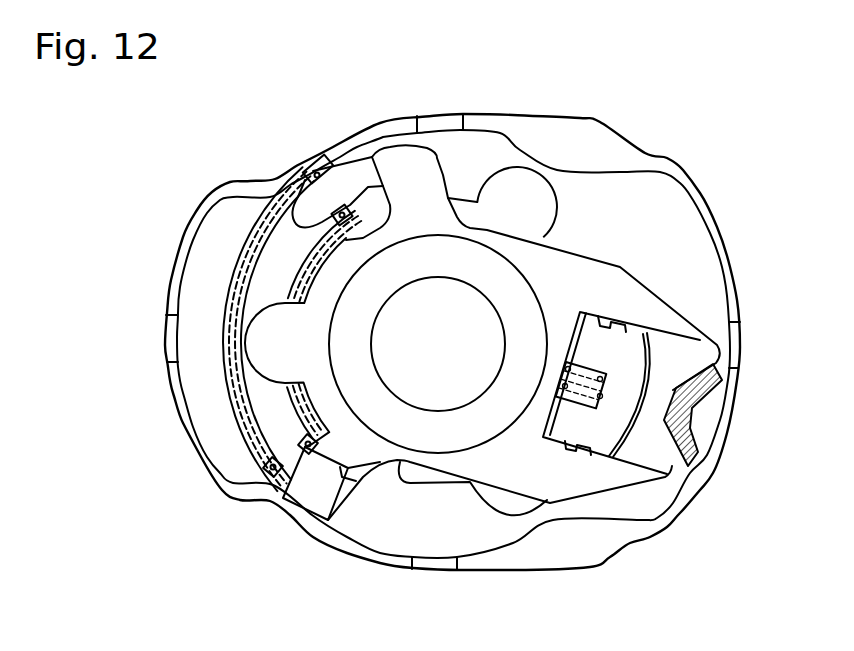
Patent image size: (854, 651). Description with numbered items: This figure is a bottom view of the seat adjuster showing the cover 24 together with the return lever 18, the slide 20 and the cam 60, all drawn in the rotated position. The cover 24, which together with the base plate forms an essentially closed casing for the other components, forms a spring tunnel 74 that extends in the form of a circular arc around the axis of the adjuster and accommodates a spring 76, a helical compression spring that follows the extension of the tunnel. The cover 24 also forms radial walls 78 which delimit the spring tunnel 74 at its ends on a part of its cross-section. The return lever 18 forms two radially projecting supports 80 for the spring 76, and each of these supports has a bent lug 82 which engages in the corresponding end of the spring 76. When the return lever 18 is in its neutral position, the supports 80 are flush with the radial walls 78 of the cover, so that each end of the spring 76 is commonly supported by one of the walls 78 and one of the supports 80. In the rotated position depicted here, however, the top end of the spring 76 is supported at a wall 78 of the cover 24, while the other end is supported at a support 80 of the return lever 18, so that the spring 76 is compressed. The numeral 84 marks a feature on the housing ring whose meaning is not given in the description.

The return lever 18 is at (602, 262).
The slide 20 is at (670, 463).
The cover 24 is at (161, 331).
The cam 60 is at (687, 417).
The spring tunnel 74 is at (255, 249).
The spring 76 is at (223, 387).
The radial walls 78 is at (338, 160).
The supports 80 is at (420, 178).
The bent lug 82 is at (270, 428).
The housing tab 84 is at (437, 565).